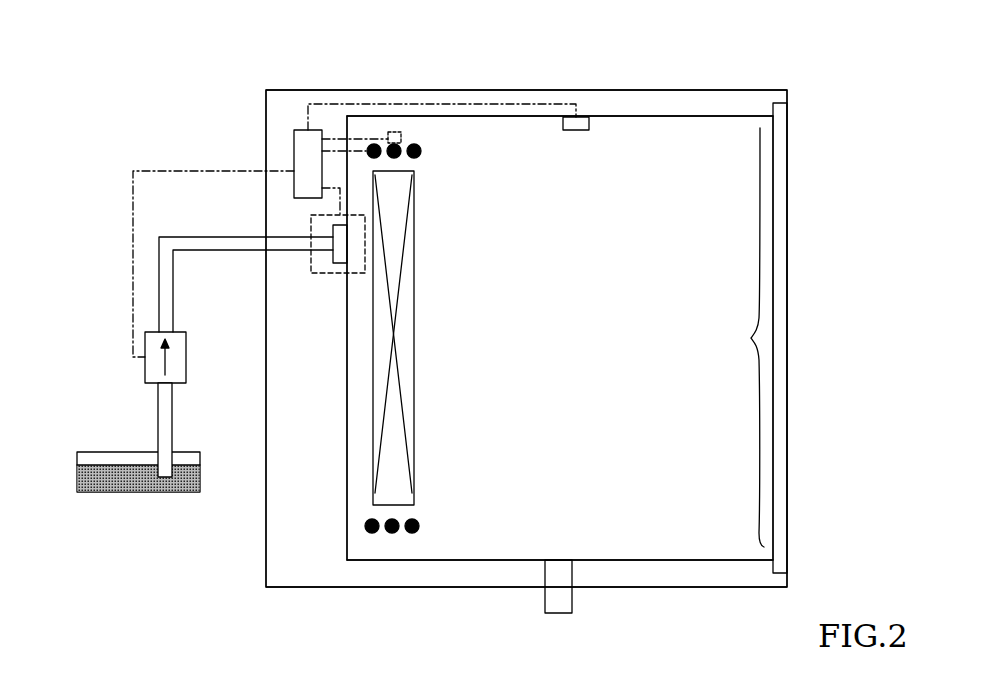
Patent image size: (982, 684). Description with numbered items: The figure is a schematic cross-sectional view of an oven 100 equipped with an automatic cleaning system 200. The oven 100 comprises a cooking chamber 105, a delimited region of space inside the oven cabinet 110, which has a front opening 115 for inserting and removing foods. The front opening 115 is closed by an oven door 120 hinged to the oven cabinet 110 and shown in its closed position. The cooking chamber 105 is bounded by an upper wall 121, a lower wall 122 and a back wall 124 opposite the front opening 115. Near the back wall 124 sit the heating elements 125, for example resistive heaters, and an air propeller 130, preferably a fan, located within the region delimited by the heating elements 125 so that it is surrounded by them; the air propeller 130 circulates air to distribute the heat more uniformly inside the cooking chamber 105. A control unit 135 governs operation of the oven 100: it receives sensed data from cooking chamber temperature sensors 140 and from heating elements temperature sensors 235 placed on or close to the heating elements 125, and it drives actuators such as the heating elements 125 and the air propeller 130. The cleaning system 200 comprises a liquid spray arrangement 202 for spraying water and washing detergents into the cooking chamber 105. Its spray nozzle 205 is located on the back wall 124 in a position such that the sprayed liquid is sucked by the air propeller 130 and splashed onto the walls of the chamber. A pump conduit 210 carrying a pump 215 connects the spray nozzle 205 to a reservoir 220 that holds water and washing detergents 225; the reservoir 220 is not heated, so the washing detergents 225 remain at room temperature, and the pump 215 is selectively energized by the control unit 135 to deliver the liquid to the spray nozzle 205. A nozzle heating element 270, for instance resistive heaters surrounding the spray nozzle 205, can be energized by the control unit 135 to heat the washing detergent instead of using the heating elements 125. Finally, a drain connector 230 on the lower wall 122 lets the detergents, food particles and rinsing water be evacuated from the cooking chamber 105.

The oven 100 is at (207, 561).
The cooking chamber 105 is at (587, 342).
The oven cabinet 110 is at (685, 90).
The front opening 115 is at (738, 337).
The oven door 120 is at (787, 197).
The upper wall 121 is at (660, 117).
The lower wall 122 is at (682, 557).
The back wall 124 is at (346, 531).
The heating elements 125 is at (421, 151).
The air propeller 130 is at (414, 500).
The control unit 135 is at (294, 160).
The cooking chamber temperature sensors 140 is at (590, 130).
The automatic cleaning system 200 is at (98, 154).
The liquid spray arrangement 202 is at (209, 398).
The spray nozzle 205 is at (311, 262).
The pump conduit 210 is at (187, 237).
The pump 215 is at (186, 357).
The reservoir 220 is at (103, 452).
The washing detergents 225 is at (93, 475).
The drain connector 230 is at (572, 600).
The heating elements temperature sensors 235 is at (401, 131).
The nozzle heating element 270 is at (343, 264).